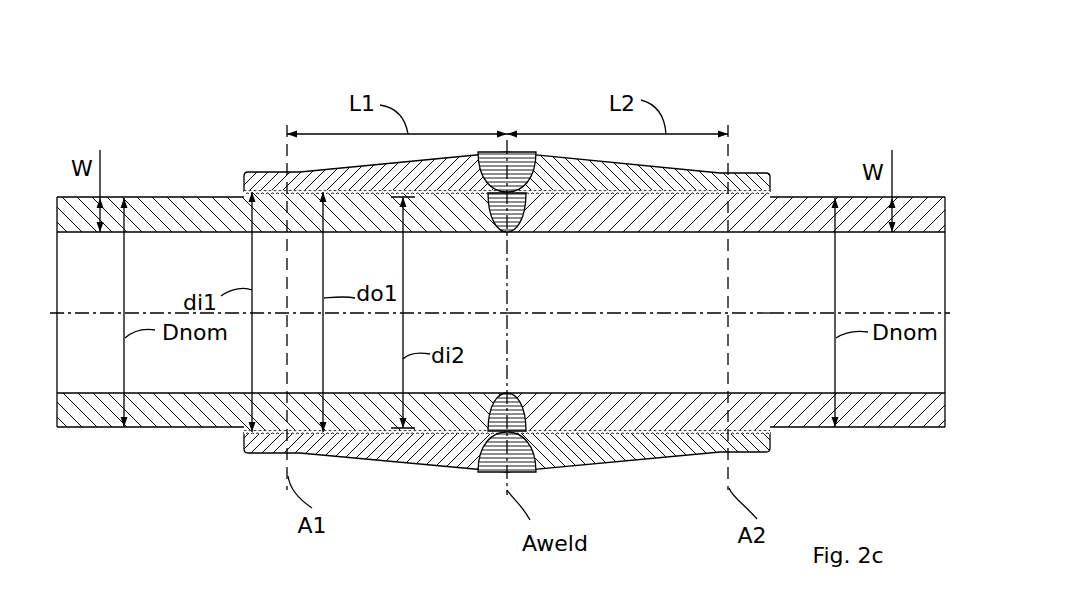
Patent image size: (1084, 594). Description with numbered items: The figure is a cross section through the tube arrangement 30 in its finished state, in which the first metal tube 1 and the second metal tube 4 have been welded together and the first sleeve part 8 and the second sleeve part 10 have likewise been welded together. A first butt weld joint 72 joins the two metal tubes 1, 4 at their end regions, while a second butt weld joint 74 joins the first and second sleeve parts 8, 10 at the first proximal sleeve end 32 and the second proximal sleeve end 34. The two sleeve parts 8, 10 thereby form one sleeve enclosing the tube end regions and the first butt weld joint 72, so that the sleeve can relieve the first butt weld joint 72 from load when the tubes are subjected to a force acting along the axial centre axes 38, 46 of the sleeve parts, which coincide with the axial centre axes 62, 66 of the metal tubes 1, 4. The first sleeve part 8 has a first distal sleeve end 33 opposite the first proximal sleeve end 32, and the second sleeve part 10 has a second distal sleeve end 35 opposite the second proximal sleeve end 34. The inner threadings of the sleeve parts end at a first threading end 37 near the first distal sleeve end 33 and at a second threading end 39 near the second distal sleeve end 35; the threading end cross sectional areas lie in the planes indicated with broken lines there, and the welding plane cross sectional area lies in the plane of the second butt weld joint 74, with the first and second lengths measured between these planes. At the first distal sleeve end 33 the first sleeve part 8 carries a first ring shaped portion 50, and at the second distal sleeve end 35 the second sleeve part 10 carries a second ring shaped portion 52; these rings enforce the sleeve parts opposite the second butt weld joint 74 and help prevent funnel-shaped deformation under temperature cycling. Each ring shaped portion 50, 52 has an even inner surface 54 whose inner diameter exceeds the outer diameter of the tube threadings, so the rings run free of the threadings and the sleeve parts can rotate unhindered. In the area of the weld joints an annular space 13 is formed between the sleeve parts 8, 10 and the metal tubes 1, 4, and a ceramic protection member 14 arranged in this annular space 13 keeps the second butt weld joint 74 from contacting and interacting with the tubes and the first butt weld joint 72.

The first metal tube 1 is at (178, 424).
The second metal tube 4 is at (818, 430).
The first sleeve part 8 is at (383, 457).
The second sleeve part 10 is at (618, 457).
The annular space 13 is at (492, 202).
The ceramic protection member 14 is at (532, 200).
The tube arrangement 30 is at (490, 278).
The first proximal sleeve end 32 is at (468, 125).
The first distal sleeve end 33 is at (273, 130).
The second proximal sleeve end 34 is at (549, 127).
The second distal sleeve end 35 is at (736, 130).
The first threading end 37 is at (285, 436).
The axial centre axis 38 is at (377, 317).
The second threading end 39 is at (728, 436).
The axial centre axis 46 is at (667, 314).
The first ring shaped portion 50 is at (258, 183).
The second ring shaped portion 52 is at (774, 170).
The even inner surface 54 is at (258, 197).
The axial centre axis 62 is at (100, 316).
The axial centre axis 66 is at (790, 314).
The first butt weld joint 72 is at (512, 417).
The second butt weld joint 74 is at (512, 354).